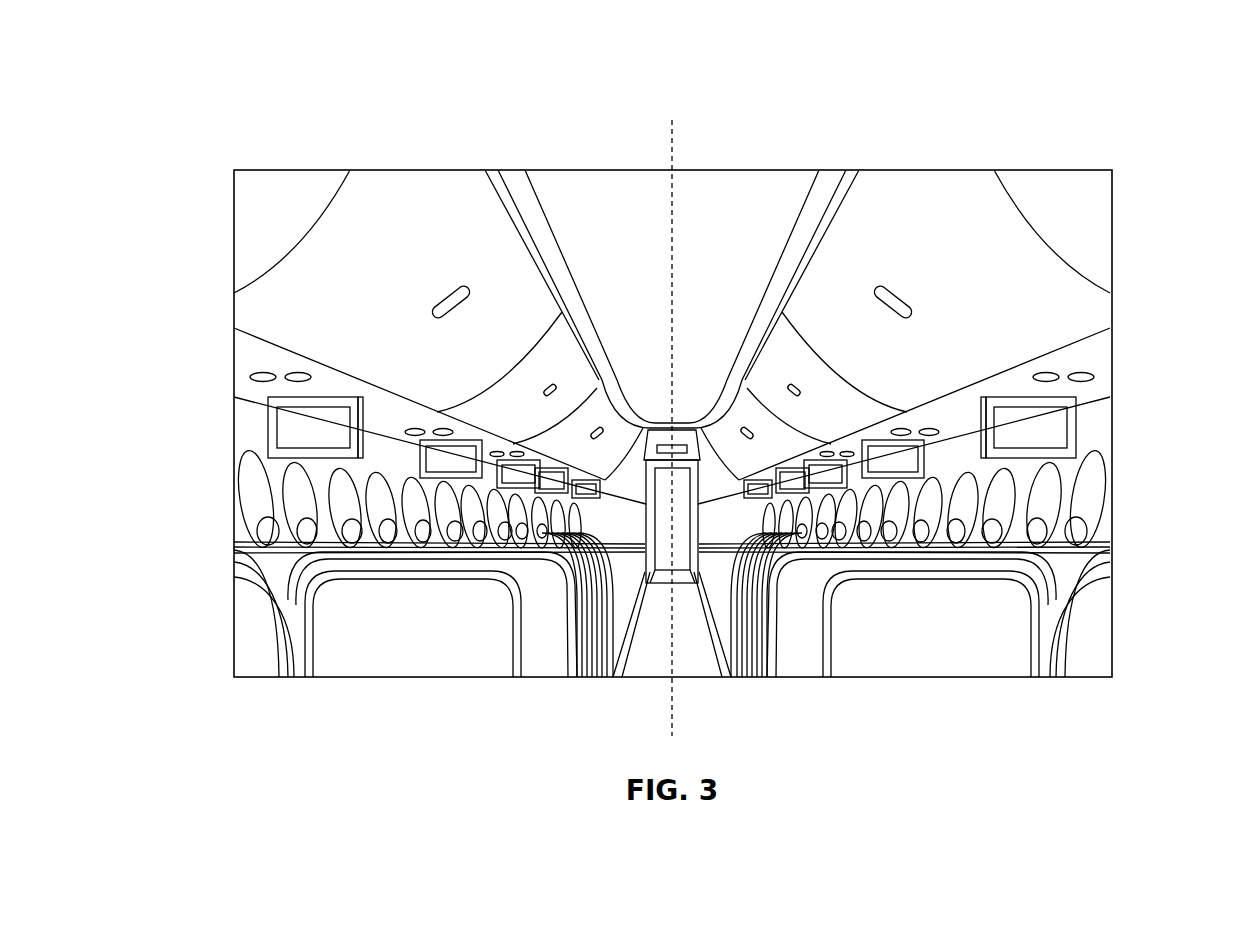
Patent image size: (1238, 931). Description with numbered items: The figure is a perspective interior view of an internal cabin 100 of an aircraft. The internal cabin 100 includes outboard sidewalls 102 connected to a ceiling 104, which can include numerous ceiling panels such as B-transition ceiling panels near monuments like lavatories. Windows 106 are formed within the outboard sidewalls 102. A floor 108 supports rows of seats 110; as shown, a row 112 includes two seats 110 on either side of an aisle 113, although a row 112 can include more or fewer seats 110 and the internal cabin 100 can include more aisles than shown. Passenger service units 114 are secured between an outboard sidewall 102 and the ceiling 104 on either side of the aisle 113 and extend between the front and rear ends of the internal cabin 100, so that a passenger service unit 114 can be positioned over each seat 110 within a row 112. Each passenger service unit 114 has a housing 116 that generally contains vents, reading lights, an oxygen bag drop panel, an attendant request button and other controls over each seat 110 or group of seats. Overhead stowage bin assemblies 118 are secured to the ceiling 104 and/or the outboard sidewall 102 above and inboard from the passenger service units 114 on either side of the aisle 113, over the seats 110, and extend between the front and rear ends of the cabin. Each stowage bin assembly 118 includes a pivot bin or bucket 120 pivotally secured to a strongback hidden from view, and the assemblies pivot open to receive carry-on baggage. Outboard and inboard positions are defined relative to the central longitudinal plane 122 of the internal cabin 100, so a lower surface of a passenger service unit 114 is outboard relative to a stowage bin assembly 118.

The internal cabin 100 is at (178, 122).
The outboard sidewall 102 is at (246, 428).
The ceiling 104 is at (732, 170).
The window 106 is at (268, 535).
The floor 108 is at (660, 655).
The seat 110 is at (410, 662).
The row 112 is at (242, 633).
The aisle 113 is at (693, 655).
The passenger service unit 114 is at (262, 380).
The housing 116 is at (243, 368).
The overhead stowage bin assembly 118 is at (344, 225).
The pivot bin 120 is at (414, 187).
The central longitudinal plane 122 is at (667, 137).